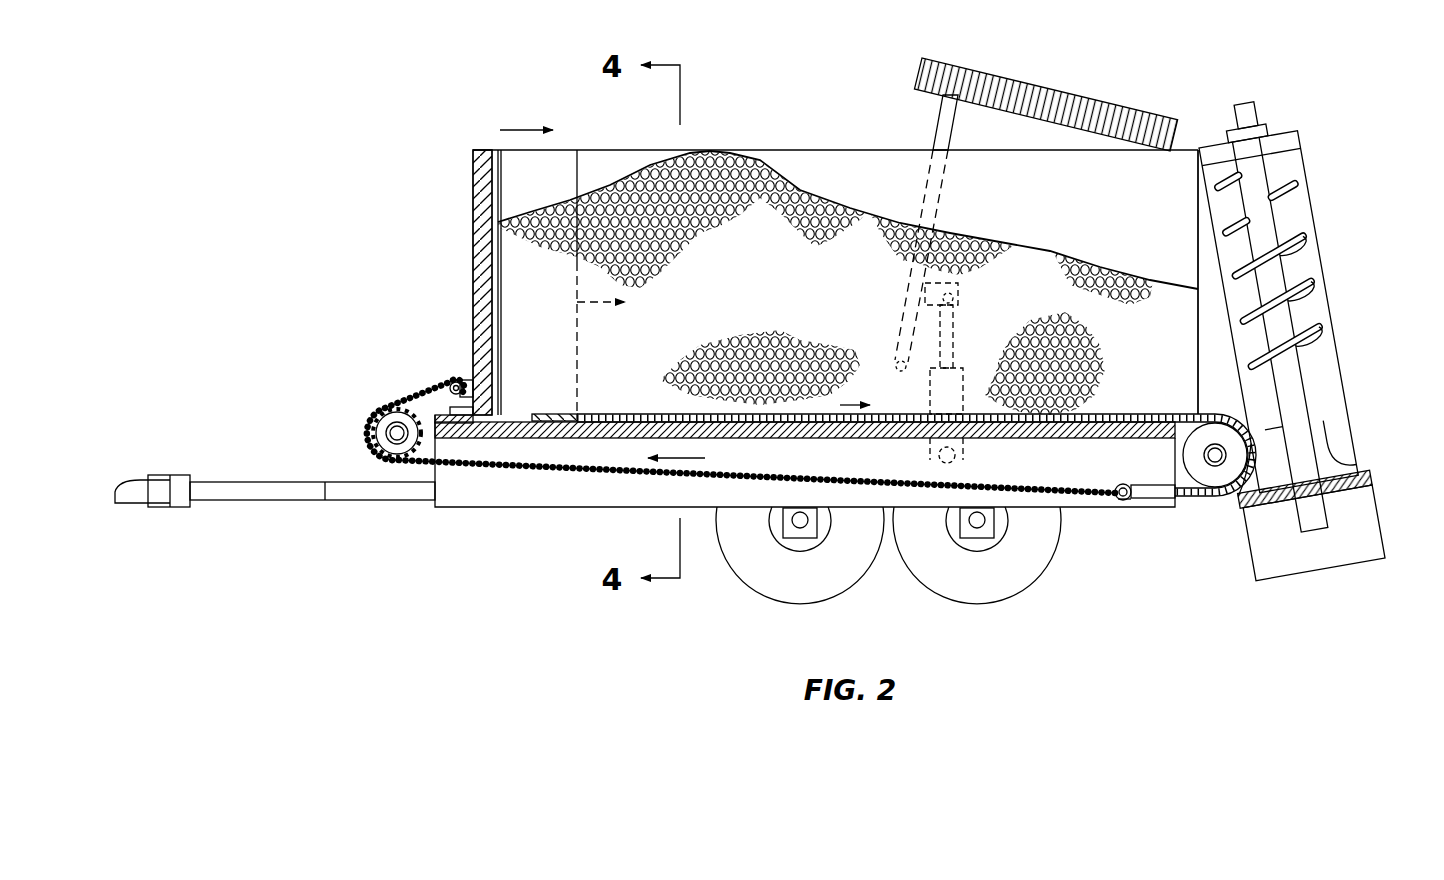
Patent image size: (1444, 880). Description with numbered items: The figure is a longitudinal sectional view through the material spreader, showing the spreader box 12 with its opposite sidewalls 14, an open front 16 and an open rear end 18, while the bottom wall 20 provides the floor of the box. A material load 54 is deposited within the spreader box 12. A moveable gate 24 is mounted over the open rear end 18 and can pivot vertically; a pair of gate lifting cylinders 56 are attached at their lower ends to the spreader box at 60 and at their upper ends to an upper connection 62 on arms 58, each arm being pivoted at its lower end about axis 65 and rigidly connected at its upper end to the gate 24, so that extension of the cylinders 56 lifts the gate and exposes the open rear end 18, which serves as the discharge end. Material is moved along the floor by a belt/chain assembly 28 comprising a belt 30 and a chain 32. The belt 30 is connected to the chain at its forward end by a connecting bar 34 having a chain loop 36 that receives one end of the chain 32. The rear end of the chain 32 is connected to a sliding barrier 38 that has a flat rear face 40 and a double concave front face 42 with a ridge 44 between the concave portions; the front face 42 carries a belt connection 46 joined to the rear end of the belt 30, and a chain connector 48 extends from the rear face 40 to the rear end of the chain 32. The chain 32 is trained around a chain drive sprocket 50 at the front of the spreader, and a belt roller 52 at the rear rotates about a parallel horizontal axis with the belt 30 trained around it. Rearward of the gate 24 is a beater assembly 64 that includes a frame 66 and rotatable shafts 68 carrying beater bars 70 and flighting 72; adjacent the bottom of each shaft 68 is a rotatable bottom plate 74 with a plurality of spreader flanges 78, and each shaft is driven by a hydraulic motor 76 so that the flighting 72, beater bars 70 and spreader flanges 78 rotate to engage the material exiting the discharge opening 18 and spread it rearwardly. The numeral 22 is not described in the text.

The spreader box 12 is at (799, 96).
The sidewalls 14 is at (641, 160).
The open front 16 is at (455, 251).
The open rear end 18 is at (1194, 269).
The bottom wall 20 is at (1046, 424).
The sprocket bracket 22 is at (468, 380).
The moveable gate 24 is at (1124, 100).
The belt/chain assembly 28 is at (1128, 510).
The belt 30 is at (636, 414).
The chain 32 is at (1078, 494).
The connecting bar 34 is at (1162, 484).
The chain loop 36 is at (1116, 484).
The sliding barrier 38 is at (479, 150).
The flat rear face 40 is at (462, 209).
The double concave front face 42 is at (499, 262).
The ridge 44 is at (577, 192).
The belt connection 46 is at (552, 414).
The chain connector 48 is at (452, 386).
The chain drive sprocket 50 is at (385, 410).
The belt roller 52 is at (1212, 468).
The material load 54 is at (804, 196).
The gate lifting cylinders 56 is at (956, 370).
The arms 58 is at (936, 140).
The lower cylinder attachment 60 is at (930, 452).
The upper connection 62 is at (962, 296).
The beater assembly 64 is at (1326, 140).
The arm pivot axis 65 is at (895, 355).
The frame 66 is at (1246, 133).
The rotatable shafts 68 is at (1279, 334).
The beater bars 70 is at (1310, 447).
The flighting 72 is at (1271, 266).
The rotatable bottom plate 74 is at (1305, 489).
The hydraulic motor 76 is at (1246, 115).
The spreader flanges 78 is at (1244, 469).